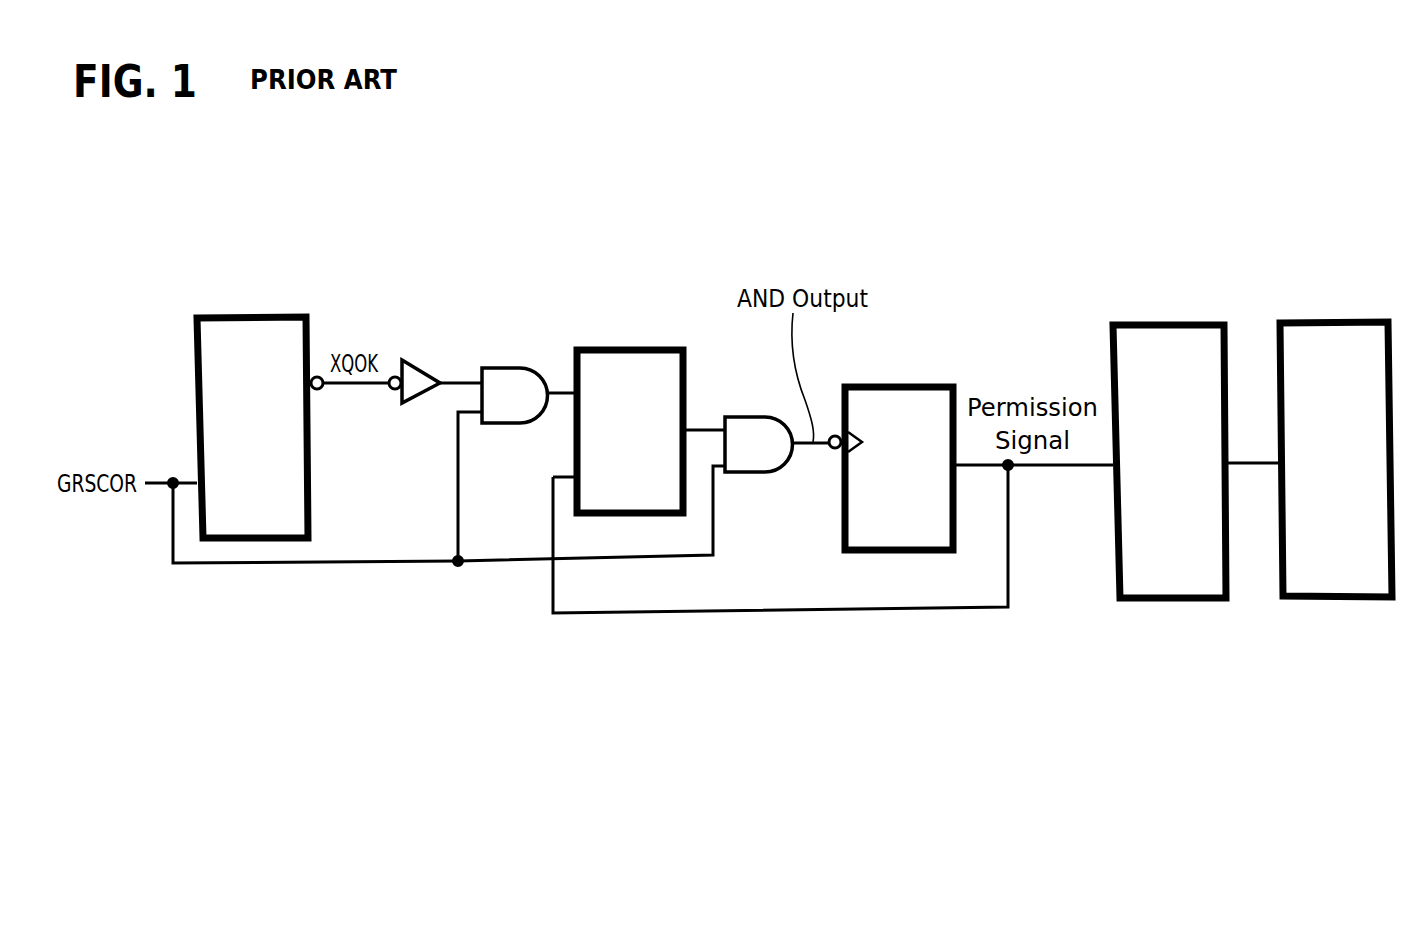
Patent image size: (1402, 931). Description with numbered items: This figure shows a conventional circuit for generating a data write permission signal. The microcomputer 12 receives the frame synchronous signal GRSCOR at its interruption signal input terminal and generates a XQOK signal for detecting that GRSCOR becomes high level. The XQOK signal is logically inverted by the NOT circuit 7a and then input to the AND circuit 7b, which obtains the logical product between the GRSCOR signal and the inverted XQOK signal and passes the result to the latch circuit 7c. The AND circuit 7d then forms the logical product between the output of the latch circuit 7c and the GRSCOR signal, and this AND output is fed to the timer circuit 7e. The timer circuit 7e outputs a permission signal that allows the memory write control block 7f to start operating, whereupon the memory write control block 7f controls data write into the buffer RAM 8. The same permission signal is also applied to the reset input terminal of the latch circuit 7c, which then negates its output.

The microcomputer 12 is at (253, 316).
The NOT circuit 7a is at (425, 360).
The AND circuit 7b is at (510, 368).
The latch circuit 7c is at (633, 347).
The AND circuit 7d is at (757, 417).
The timer circuit 7e is at (894, 384).
The memory write control block 7f is at (1150, 323).
The buffer RAM 8 is at (1344, 321).